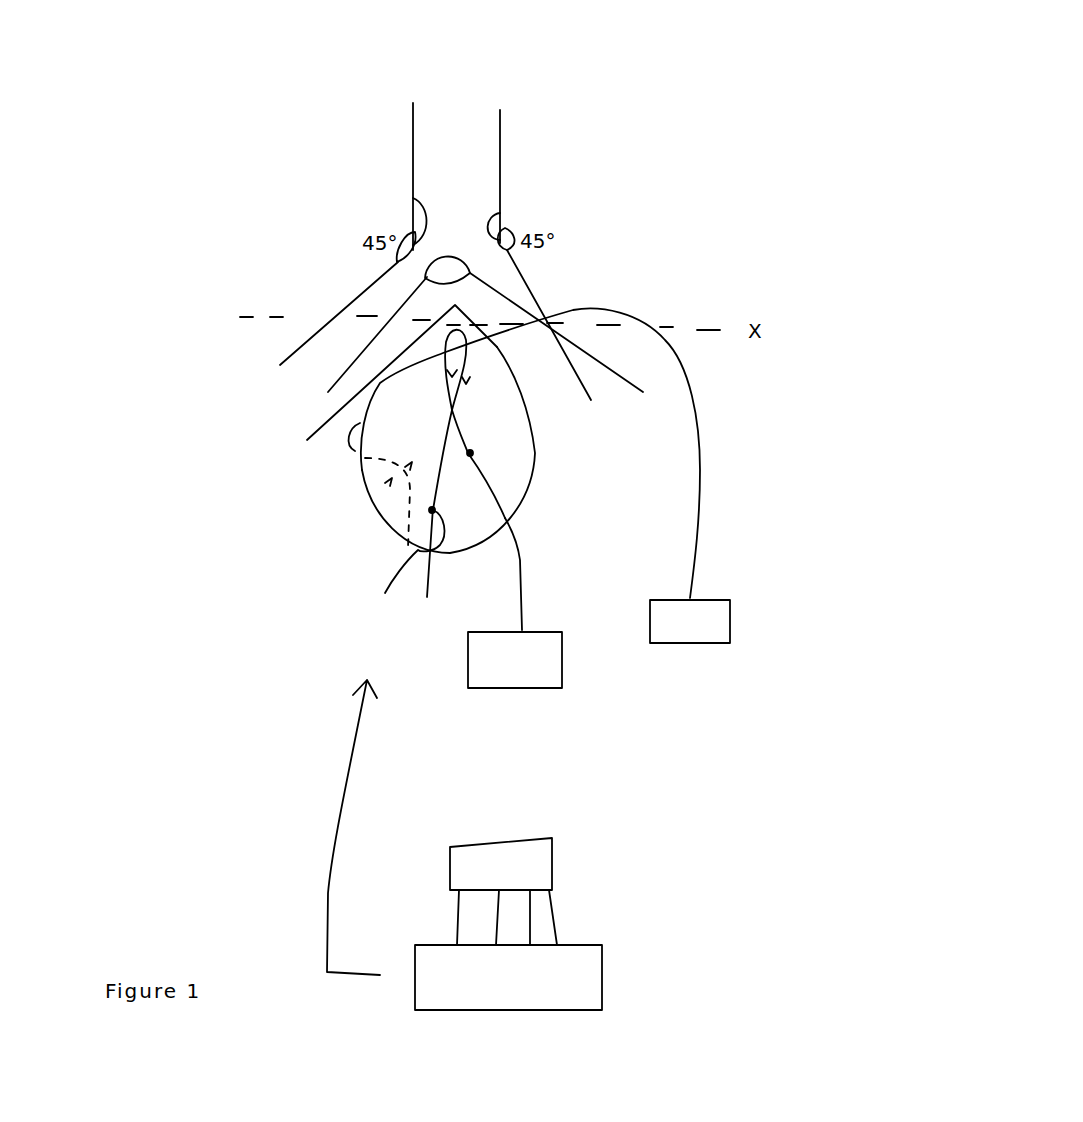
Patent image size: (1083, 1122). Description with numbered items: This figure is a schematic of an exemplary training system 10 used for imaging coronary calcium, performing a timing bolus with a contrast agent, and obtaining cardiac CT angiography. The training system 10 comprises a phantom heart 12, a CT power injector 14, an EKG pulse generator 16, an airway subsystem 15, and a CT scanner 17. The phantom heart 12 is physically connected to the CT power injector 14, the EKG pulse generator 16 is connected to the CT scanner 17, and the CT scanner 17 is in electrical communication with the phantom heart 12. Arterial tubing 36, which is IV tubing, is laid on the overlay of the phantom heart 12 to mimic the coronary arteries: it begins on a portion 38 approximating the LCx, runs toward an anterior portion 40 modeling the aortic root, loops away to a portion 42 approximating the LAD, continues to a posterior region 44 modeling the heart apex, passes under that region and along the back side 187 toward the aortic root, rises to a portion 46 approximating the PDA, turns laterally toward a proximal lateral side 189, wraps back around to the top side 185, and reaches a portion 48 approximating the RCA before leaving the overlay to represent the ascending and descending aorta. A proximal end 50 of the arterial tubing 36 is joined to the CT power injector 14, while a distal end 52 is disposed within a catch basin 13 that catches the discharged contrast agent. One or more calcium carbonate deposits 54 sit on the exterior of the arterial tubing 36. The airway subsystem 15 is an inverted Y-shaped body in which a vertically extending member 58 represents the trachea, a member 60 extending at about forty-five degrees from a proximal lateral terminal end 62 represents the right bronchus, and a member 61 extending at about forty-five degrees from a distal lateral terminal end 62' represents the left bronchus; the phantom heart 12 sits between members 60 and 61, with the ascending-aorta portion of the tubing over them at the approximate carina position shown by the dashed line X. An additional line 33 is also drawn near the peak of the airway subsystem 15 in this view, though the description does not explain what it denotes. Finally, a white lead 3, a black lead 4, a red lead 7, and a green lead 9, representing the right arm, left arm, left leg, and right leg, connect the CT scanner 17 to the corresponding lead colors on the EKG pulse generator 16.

The training system 10 is at (656, 36).
The phantom heart 12 is at (249, 524).
The catch basin 13 is at (690, 621).
The CT power injector 14 is at (515, 660).
The airway subsystem 15 is at (632, 143).
The EKG pulse generator 16 is at (501, 864).
The CT scanner 17 is at (508, 977).
The white lead 3 is at (444, 917).
The black lead 4 is at (486, 917).
The red lead 7 is at (520, 917).
The green lead 9 is at (588, 897).
The outer sheath 33 is at (523, 320).
The arterial tubing 36 is at (538, 589).
The portion of overlay 38 is at (463, 378).
The anterior portion of overlay 40 is at (491, 370).
The portion of overlay 42 is at (440, 490).
The posterior region of overlay 44 is at (405, 569).
The portion of overlay 46 is at (362, 495).
The portion of overlay 48 is at (360, 470).
The proximal end of arterial tubing 50 is at (538, 629).
The distal end of arterial tubing 52 is at (687, 600).
The calcium carbonate deposit 54 is at (470, 453).
The vertically extending member 58 is at (487, 152).
The member 60 is at (327, 343).
The member 61 is at (595, 362).
The proximal lateral terminal end 62 is at (391, 176).
The distal lateral terminal end 62' is at (530, 217).
The top side of overlay 185 is at (527, 427).
The back side of overlay 187 is at (505, 506).
The proximal lateral side of overlay 189 is at (346, 503).